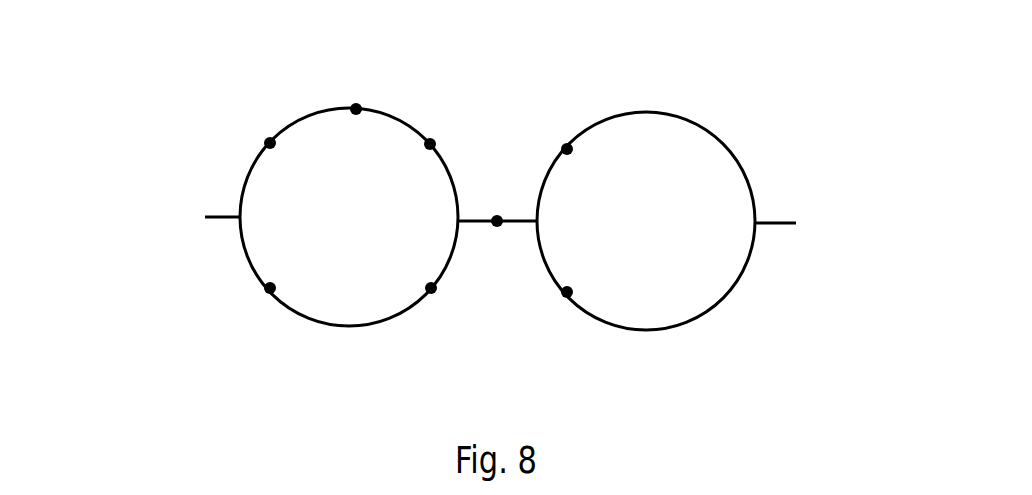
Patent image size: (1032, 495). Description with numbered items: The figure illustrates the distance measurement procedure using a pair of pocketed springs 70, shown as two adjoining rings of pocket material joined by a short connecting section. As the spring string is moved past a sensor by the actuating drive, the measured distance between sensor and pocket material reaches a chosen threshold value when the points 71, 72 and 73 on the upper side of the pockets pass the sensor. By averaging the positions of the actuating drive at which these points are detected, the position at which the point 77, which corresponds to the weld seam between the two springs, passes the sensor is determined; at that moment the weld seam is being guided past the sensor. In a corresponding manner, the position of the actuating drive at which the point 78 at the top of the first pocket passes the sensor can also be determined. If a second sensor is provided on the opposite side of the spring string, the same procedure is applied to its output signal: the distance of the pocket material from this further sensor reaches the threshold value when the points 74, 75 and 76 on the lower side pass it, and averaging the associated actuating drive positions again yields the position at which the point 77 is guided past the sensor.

The pair of pocketed springs 70 is at (532, 170).
The point 71 is at (268, 141).
The point 72 is at (433, 142).
The point 73 is at (564, 146).
The point 74 is at (268, 291).
The point 75 is at (434, 291).
The point 76 is at (564, 295).
The point corresponding to the weld seam 77 is at (497, 216).
The point 78 is at (359, 107).